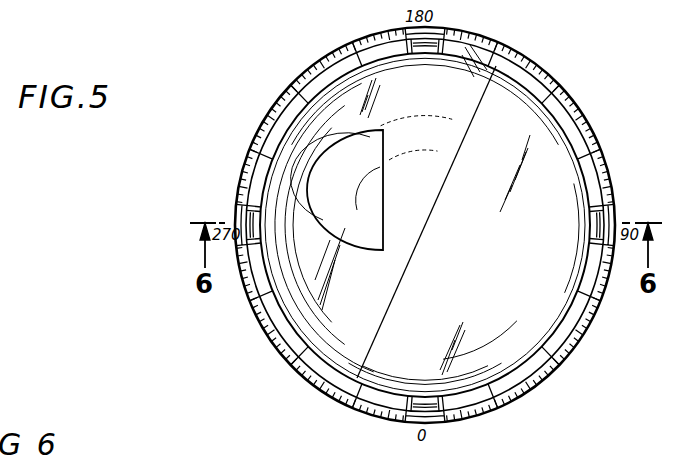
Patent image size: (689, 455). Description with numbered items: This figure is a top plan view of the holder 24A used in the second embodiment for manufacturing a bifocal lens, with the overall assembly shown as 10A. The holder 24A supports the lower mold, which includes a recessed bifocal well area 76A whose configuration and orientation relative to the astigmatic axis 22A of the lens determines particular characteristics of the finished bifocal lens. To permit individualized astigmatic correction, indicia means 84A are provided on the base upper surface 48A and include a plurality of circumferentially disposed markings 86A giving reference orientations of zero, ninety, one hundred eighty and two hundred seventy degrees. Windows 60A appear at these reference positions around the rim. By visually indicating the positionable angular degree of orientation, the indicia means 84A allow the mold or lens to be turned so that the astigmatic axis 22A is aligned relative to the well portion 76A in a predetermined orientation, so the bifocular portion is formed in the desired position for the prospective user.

The pressure gauge 10A is at (422, 231).
The astigmatic axis 22A is at (419, 247).
The holder 24A is at (305, 52).
The base upper surface 48A is at (511, 396).
The window 60A is at (445, 32).
The bifocal well area 76A is at (360, 244).
The indicia means 84A is at (590, 102).
The circumferentially disposed markings 86A is at (412, 237).